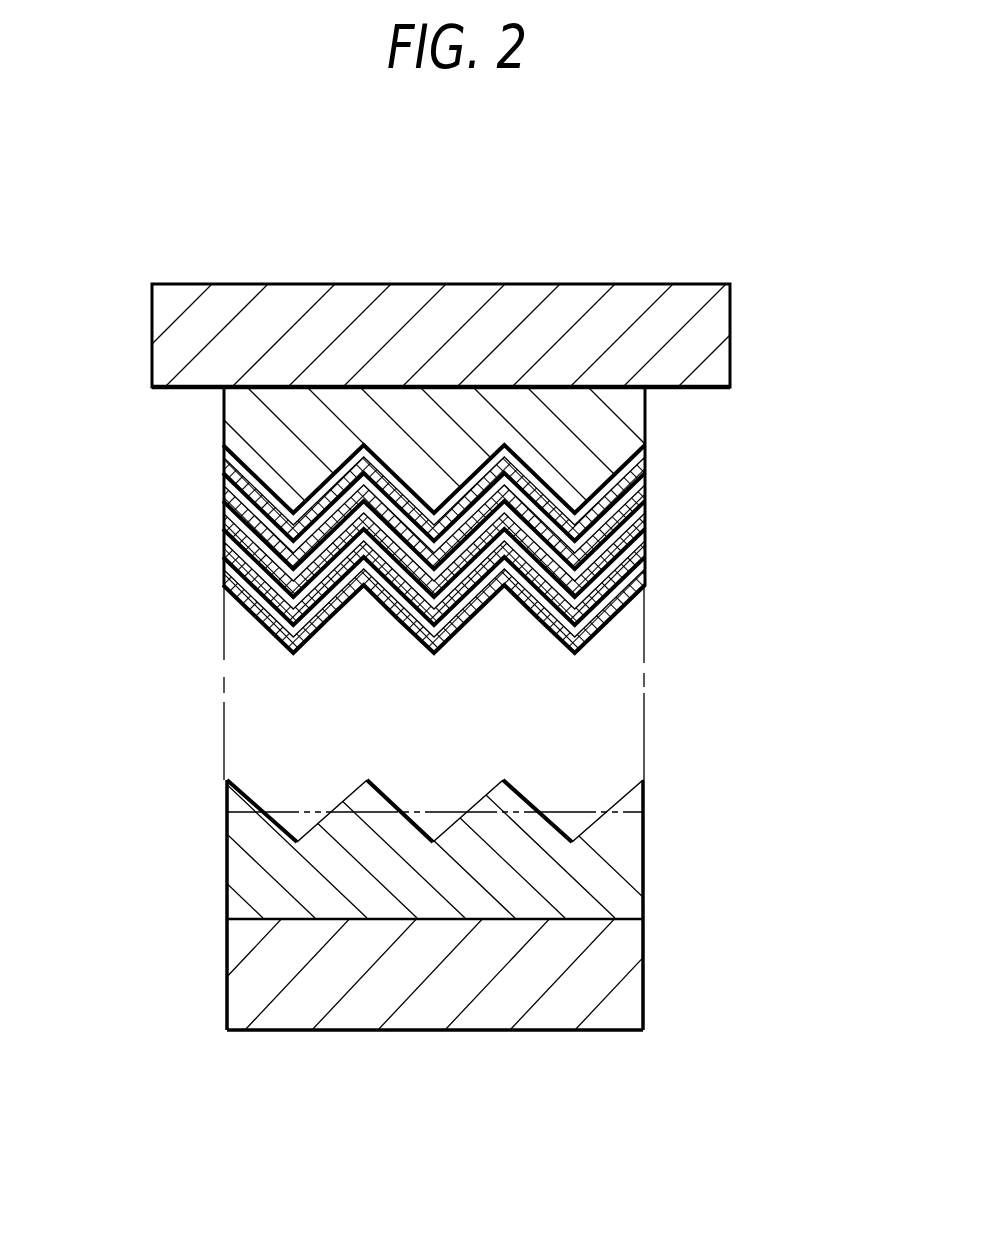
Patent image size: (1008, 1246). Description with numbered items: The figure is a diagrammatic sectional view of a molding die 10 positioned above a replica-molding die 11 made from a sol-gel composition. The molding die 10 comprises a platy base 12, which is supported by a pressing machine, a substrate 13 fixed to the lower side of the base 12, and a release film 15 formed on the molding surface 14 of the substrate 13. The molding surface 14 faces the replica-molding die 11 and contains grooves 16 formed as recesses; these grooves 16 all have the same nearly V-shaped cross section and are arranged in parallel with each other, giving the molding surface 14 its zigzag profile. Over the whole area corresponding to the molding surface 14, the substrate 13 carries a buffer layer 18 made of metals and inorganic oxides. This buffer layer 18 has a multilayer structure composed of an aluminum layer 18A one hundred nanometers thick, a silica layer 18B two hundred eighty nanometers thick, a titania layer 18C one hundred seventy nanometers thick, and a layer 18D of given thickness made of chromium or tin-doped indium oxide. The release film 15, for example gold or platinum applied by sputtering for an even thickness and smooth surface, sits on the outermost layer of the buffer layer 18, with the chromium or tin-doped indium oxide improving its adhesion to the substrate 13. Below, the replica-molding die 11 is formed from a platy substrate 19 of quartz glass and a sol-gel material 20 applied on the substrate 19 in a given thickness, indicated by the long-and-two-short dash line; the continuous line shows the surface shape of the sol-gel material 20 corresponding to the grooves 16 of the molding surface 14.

The molding die 10 is at (835, 397).
The replica-molding die 11 is at (775, 923).
The platy base 12 is at (173, 338).
The substrate 13 is at (260, 425).
The molding surface 14 is at (371, 670).
The release film 15 is at (238, 595).
The grooves 16 is at (367, 587).
The buffer layer 18 is at (790, 430).
The aluminum layer 18A is at (648, 485).
The silica layer 18B is at (648, 523).
The titania layer 18C is at (648, 560).
The chromium or tin-doped indium oxide layer 18D is at (648, 588).
The platy substrate 19 is at (267, 972).
The sol-gel material 20 is at (267, 870).